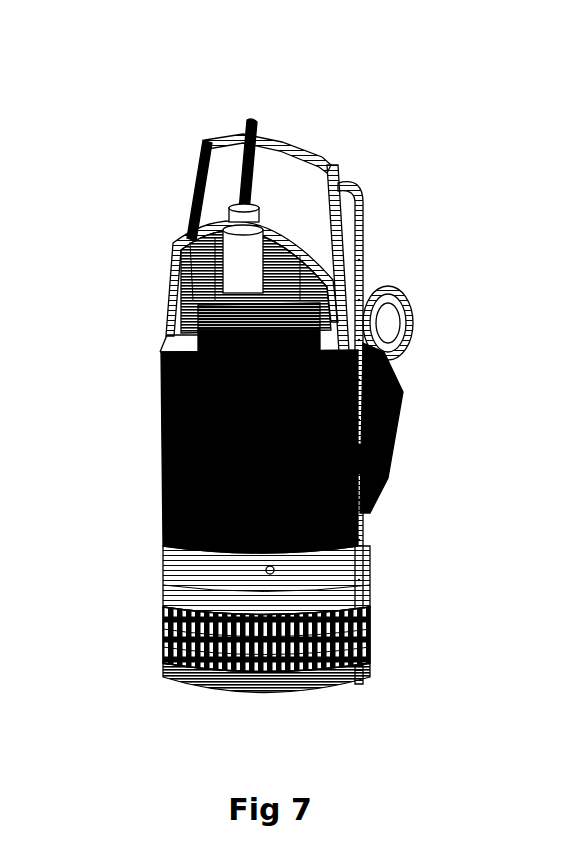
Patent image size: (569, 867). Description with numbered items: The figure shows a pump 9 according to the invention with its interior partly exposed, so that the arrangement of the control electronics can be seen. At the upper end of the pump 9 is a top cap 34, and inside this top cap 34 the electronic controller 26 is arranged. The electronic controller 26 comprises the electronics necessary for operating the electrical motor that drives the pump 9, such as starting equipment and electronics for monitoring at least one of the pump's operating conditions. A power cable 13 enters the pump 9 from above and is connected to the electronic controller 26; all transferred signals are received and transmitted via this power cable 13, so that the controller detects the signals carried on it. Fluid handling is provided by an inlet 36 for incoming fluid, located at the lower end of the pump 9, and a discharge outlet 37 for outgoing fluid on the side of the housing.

The pump 9 is at (443, 145).
The power cable 13 is at (247, 128).
The electronic controller 26 is at (233, 350).
The top cap 34 is at (172, 258).
The inlet 36 is at (163, 637).
The discharge outlet 37 is at (405, 305).